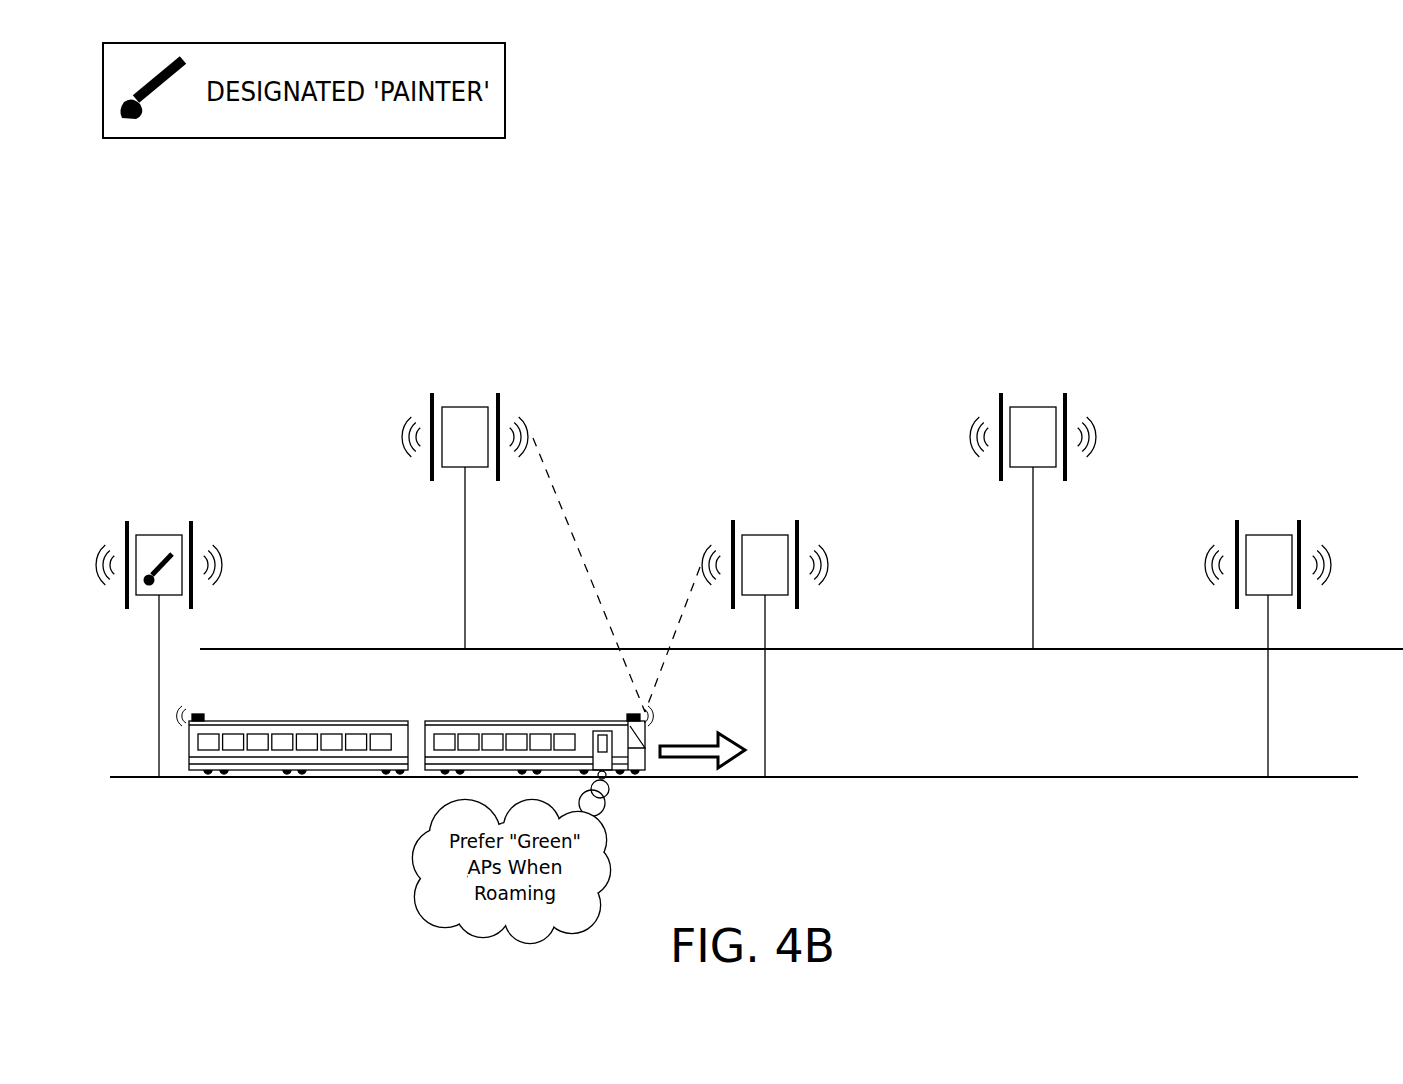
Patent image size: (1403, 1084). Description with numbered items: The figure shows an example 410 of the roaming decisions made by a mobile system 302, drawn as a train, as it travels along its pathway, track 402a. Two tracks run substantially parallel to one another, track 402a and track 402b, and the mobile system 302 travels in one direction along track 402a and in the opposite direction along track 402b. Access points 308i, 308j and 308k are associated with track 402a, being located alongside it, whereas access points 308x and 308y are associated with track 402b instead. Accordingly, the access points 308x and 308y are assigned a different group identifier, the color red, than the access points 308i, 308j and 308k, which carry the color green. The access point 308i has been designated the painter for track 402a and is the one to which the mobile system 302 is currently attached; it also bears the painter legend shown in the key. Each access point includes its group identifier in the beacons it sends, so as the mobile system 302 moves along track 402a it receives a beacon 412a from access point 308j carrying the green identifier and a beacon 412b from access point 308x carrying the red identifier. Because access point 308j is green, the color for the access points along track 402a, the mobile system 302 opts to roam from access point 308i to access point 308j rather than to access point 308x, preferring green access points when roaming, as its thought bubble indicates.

The example of roaming decisions 410 is at (1298, 114).
The mobile system 302 is at (288, 721).
The access point 308i is at (159, 535).
The access point 308x is at (465, 407).
The access point 308j is at (766, 535).
The access point 308y is at (1033, 407).
The access point 308k is at (1268, 535).
The beacon 412a is at (678, 584).
The beacon 412b is at (614, 475).
The track 402a is at (870, 778).
The track 402b is at (945, 650).